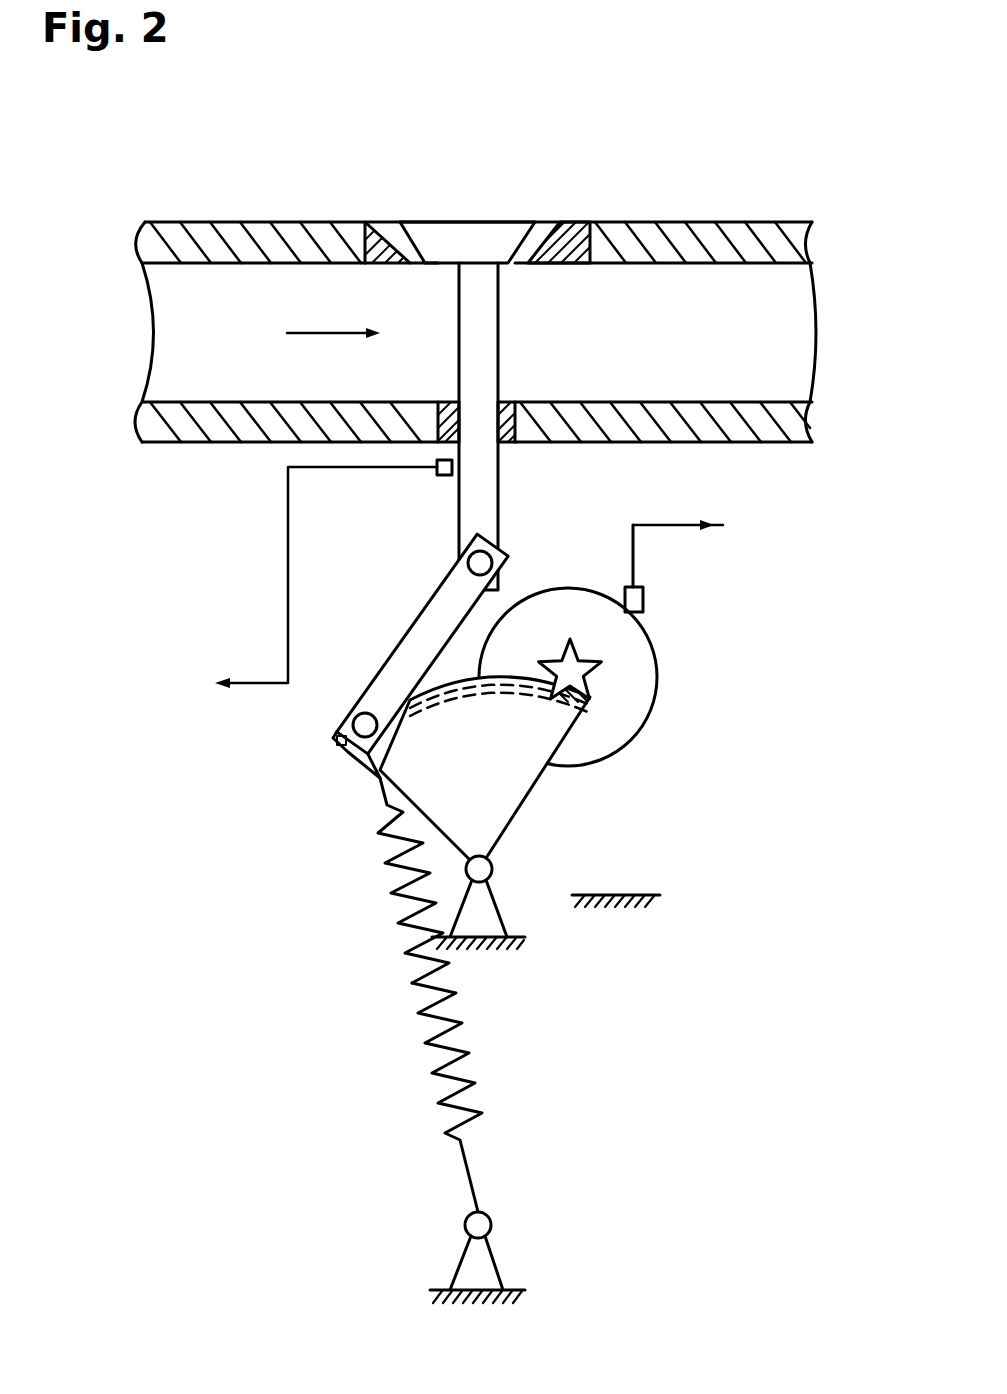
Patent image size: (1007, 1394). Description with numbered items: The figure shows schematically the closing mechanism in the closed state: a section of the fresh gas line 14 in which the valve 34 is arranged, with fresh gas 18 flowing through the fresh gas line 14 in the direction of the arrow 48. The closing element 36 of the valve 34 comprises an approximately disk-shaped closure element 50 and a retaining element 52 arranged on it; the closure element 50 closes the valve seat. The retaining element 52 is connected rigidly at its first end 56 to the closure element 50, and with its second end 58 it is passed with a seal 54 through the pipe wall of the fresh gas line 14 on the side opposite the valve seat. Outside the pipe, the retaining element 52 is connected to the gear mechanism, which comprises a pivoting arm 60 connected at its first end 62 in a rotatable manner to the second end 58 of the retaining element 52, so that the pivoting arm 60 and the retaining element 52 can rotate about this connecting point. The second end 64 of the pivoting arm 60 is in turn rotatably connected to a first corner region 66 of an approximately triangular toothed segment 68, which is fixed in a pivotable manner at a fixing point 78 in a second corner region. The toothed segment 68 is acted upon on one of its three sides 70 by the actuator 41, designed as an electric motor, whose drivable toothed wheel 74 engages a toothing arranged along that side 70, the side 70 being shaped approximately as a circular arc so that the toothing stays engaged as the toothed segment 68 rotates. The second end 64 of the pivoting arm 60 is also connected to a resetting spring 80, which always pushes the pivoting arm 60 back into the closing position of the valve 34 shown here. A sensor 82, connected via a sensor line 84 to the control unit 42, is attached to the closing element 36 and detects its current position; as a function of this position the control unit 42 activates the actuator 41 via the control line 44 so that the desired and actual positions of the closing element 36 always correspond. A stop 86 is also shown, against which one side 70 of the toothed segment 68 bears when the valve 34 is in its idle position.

The fresh gas line 14 is at (250, 222).
The fresh gas 18 is at (269, 381).
The valve 34 is at (680, 345).
The closing element 36 is at (518, 283).
The actuator 41 is at (660, 677).
The control unit 42 is at (466, 609).
The control line 44 is at (672, 525).
The arrow 48 is at (322, 330).
The approximately disk-shaped closure element 50 is at (528, 222).
The retaining element 52 is at (499, 343).
The seal 54 is at (507, 442).
The first end 56 is at (458, 298).
The second end 58 is at (499, 495).
The pivoting arm 60 is at (422, 607).
The first end 62 is at (468, 556).
The second end 64 is at (353, 716).
The first corner region 66 is at (360, 755).
The toothed segment 68 is at (502, 845).
The side 70 is at (508, 678).
The toothed wheel 74 is at (602, 668).
The fixing point 78 is at (405, 876).
The resetting spring 80 is at (450, 1090).
The sensor 82 is at (440, 460).
The sensor line 84 is at (288, 580).
The stop 86 is at (660, 895).